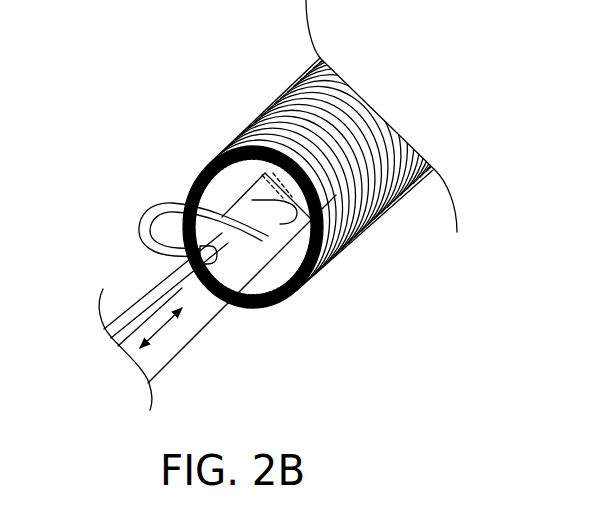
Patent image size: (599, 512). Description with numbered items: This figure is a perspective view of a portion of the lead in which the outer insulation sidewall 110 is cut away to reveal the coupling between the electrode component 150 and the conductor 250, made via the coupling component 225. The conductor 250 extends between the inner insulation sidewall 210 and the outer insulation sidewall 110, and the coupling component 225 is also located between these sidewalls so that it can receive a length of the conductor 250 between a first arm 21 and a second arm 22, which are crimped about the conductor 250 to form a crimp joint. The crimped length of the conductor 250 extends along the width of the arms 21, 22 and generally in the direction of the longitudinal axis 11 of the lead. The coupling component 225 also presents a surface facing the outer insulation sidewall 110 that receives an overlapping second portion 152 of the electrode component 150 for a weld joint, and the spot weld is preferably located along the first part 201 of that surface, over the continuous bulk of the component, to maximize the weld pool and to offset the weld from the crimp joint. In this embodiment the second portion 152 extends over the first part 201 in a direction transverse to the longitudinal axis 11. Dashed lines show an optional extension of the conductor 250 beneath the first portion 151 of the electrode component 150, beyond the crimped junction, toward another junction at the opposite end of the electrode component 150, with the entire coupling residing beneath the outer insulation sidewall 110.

The longitudinal axis 11 is at (187, 325).
The first arm 21 is at (197, 242).
The second arm 22 is at (210, 260).
The outer insulation sidewall 110 is at (280, 222).
The electrode component 150 is at (157, 165).
The first portion of electrode component 151 is at (243, 116).
The second portion of electrode component 152 is at (236, 271).
The first part of surface 201 is at (322, 257).
The inner insulation sidewall 210 is at (191, 358).
The coupling component 225 is at (250, 242).
The conductor 250 is at (133, 333).